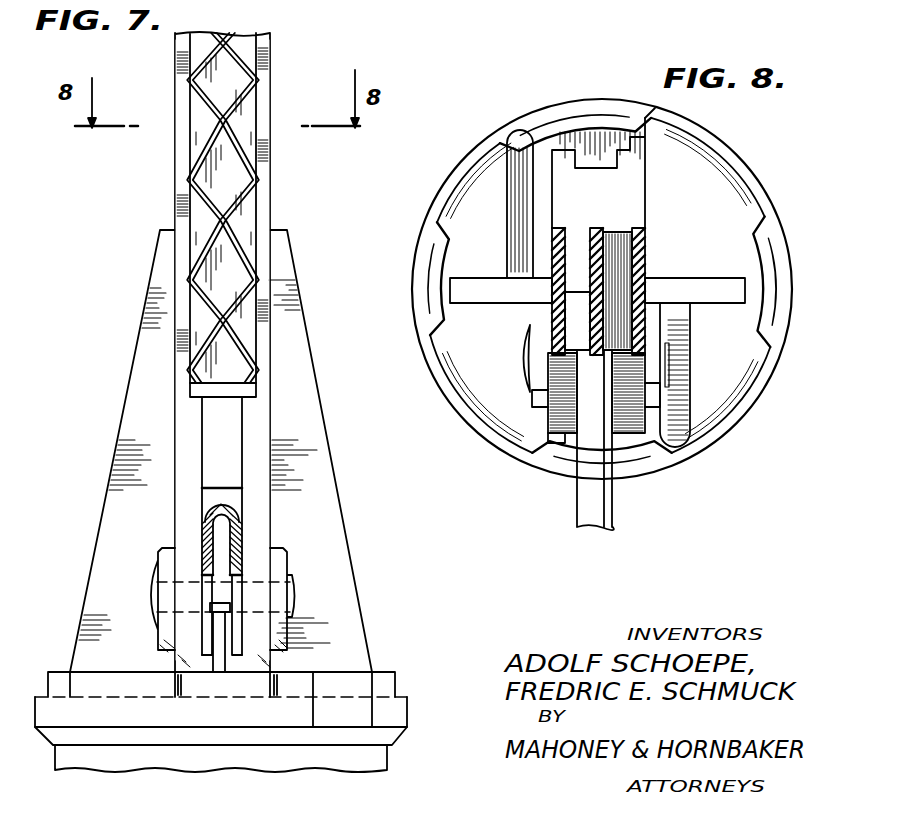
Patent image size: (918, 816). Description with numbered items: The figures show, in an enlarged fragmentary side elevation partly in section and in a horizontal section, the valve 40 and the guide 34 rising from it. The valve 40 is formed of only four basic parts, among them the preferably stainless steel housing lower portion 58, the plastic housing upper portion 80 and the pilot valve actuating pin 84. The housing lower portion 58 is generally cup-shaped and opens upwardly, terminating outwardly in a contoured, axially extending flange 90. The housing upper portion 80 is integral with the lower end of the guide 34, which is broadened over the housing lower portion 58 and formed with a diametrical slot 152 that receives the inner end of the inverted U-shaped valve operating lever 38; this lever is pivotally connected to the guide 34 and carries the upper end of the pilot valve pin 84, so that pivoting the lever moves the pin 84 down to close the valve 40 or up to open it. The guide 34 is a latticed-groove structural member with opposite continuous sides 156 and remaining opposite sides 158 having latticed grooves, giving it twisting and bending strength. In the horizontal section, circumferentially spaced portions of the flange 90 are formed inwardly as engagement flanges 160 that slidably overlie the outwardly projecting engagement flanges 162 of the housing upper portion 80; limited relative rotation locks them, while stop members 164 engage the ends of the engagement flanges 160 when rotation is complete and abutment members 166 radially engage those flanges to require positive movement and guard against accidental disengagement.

In FIG. 7, the guide 34 is at (180, 88).
In FIG. 8, the guide 34 is at (640, 258).
In FIG. 7, the valve operating lever 38 is at (235, 512).
In FIG. 8, the valve operating lever 38 is at (590, 490).
In FIG. 7, the valve 40 is at (402, 750).
In FIG. 8, the valve 40 is at (752, 168).
In FIG. 7, the housing lower portion 58 is at (113, 758).
In FIG. 8, the housing lower portion 58 is at (457, 176).
In FIG. 8, the housing upper portion 80 is at (503, 366).
In FIG. 7, the pilot valve actuating pin 84 is at (222, 638).
In FIG. 7, the flange 90 is at (378, 712).
In FIG. 8, the flange 90 is at (462, 420).
In FIG. 7, the diametrical slot 152 is at (210, 497).
In FIG. 8, the diametrical slot 152 is at (608, 413).
In FIG. 7, the continuous sides 156 is at (175, 149).
In FIG. 8, the continuous sides 156 is at (553, 315).
In FIG. 7, the latticed-groove sides 158 is at (228, 176).
In FIG. 8, the latticed-groove sides 158 is at (570, 252).
In FIG. 7, the engagement flanges 160 is at (48, 685).
In FIG. 8, the engagement flanges 160 is at (573, 122).
In FIG. 8, the engagement flanges 162 is at (600, 118).
In FIG. 8, the stop members 164 is at (508, 145).
In FIG. 8, the abutment members 166 is at (656, 108).